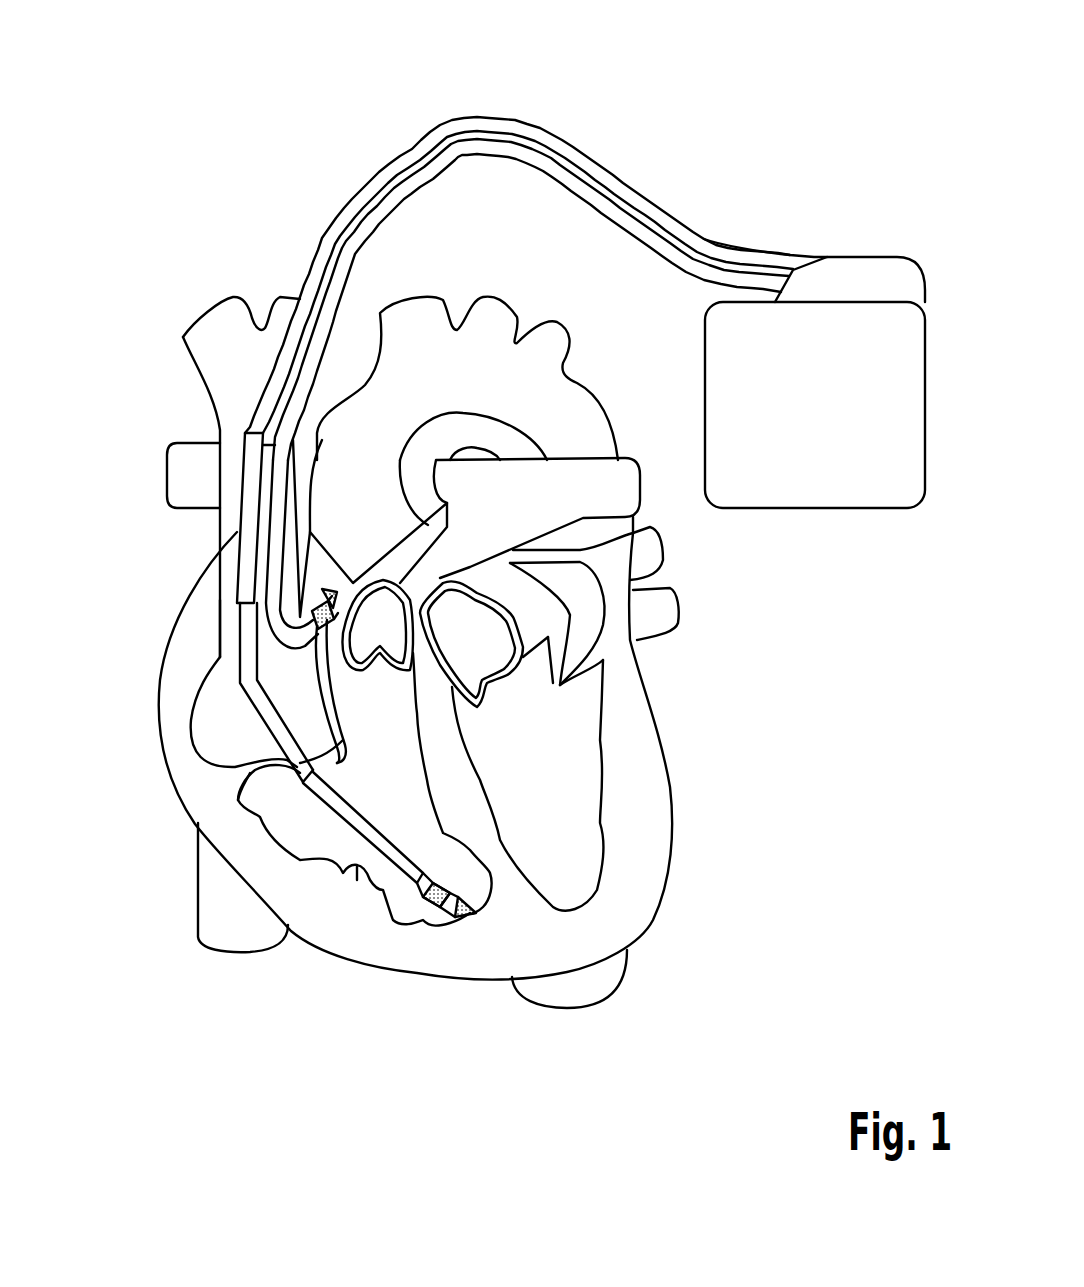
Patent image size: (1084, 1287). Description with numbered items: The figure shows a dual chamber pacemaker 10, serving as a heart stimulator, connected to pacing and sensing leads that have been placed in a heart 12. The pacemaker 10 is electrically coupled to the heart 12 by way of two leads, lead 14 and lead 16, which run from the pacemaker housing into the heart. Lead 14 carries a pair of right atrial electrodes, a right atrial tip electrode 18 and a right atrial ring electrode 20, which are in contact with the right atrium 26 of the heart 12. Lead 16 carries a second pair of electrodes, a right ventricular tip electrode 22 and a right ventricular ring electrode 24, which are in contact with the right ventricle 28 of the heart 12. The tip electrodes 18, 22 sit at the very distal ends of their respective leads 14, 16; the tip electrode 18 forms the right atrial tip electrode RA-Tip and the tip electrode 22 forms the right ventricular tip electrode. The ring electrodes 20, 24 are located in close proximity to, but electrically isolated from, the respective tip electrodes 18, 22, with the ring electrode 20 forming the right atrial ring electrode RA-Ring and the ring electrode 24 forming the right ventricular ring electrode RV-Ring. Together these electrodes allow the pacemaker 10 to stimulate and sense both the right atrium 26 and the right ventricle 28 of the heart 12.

The dual chamber pacemaker 10 is at (832, 487).
The heart 12 is at (165, 818).
The lead 14 is at (697, 263).
The lead 16 is at (583, 161).
The right atrial tip electrode 18 is at (322, 591).
The right atrial ring electrode 20 is at (311, 619).
The right ventricular tip electrode 22 is at (458, 918).
The right ventricular ring electrode 24 is at (435, 895).
The right atrium 26 is at (207, 733).
The right ventricle 28 is at (283, 817).